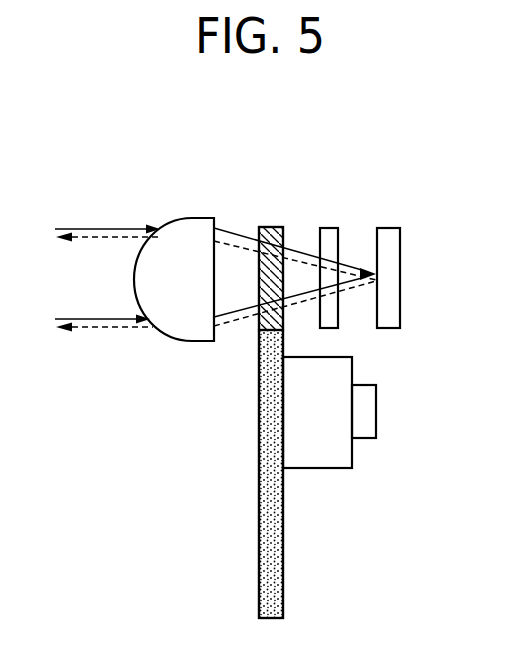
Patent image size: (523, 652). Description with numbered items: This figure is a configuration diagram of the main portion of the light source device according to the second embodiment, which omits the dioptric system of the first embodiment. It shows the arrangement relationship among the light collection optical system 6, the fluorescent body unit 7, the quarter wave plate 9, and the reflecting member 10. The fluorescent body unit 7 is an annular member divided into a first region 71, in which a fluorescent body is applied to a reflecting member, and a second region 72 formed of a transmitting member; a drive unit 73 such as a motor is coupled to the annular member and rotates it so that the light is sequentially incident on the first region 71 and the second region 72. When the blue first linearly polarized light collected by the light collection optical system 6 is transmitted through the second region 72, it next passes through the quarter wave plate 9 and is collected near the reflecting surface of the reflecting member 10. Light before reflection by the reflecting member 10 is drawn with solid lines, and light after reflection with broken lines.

The light collection optical system 6 is at (192, 217).
The fluorescent body unit 7 is at (283, 506).
The first region 71 is at (283, 577).
The second region 72 is at (275, 227).
The drive unit 73 is at (352, 450).
The quarter wave plate 9 is at (328, 228).
The reflecting member 10 is at (400, 257).